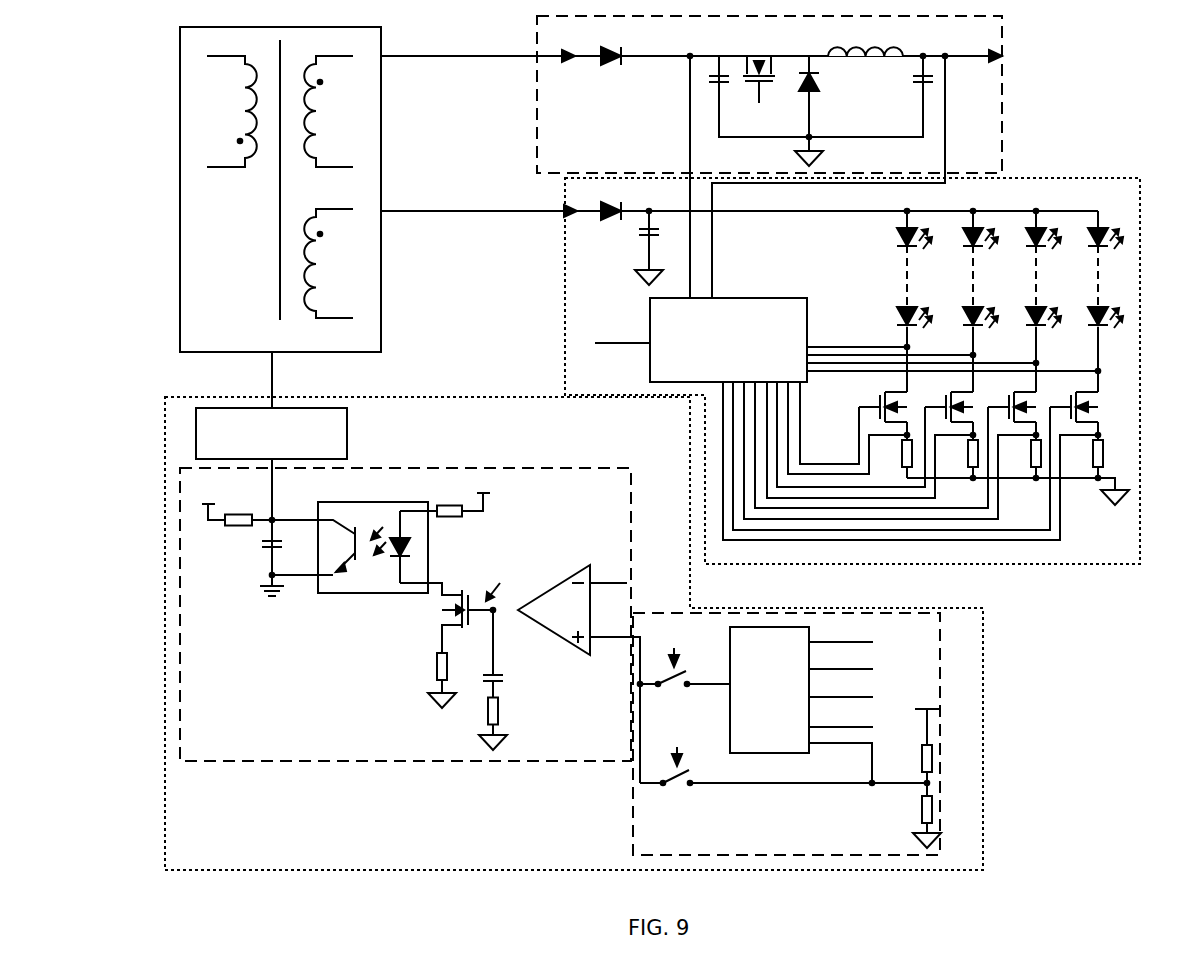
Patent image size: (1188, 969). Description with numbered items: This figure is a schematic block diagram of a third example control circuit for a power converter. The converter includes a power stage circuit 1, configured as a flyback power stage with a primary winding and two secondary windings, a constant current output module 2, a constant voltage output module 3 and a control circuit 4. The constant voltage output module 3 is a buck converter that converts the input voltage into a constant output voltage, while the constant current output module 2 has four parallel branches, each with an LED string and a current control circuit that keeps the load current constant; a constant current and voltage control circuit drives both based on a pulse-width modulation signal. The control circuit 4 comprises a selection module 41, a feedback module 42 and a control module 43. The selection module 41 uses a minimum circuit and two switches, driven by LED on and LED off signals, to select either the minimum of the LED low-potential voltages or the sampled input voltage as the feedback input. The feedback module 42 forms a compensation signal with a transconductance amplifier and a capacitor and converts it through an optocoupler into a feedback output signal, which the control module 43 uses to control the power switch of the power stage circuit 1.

The power stage circuit 1 is at (383, 43).
The constant current output module 2 is at (1072, 178).
The constant voltage output module 3 is at (1002, 43).
The control circuit 4 is at (574, 633).
The selection module 41 is at (942, 662).
The feedback module 42 is at (618, 468).
The control module 43 is at (347, 432).